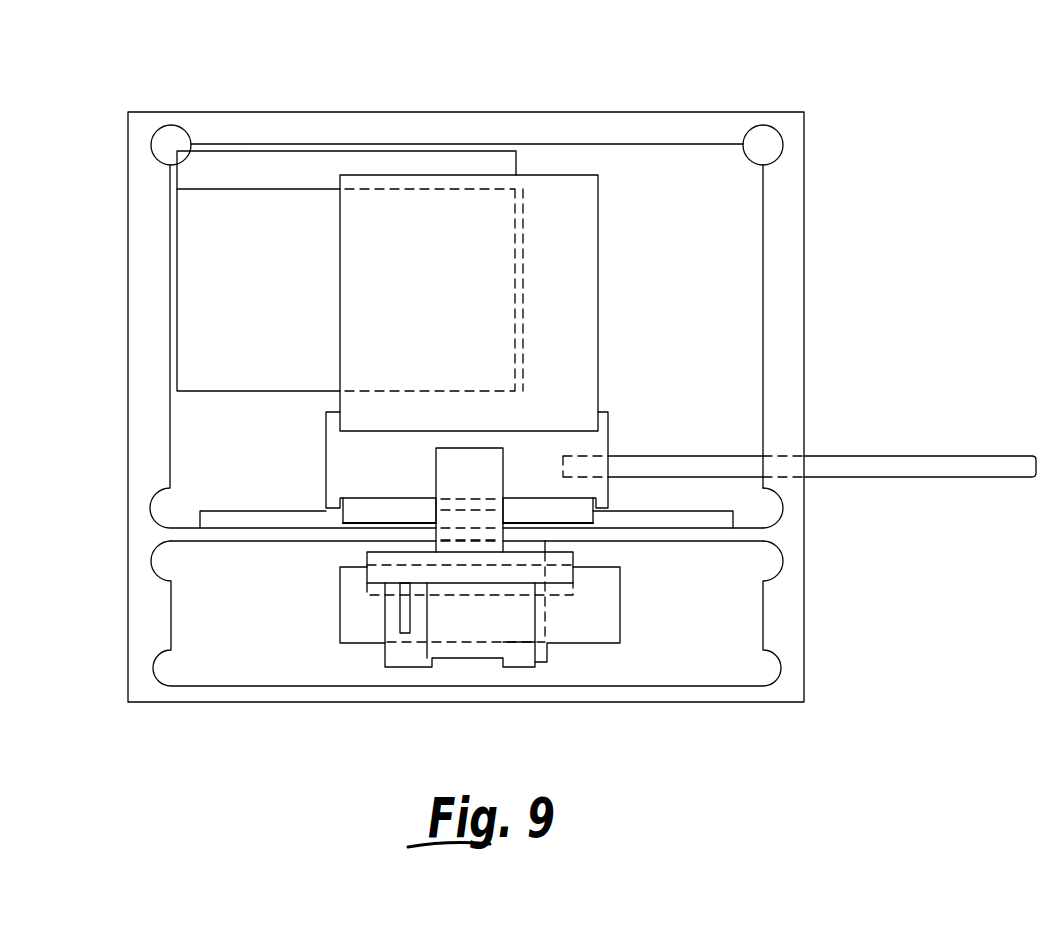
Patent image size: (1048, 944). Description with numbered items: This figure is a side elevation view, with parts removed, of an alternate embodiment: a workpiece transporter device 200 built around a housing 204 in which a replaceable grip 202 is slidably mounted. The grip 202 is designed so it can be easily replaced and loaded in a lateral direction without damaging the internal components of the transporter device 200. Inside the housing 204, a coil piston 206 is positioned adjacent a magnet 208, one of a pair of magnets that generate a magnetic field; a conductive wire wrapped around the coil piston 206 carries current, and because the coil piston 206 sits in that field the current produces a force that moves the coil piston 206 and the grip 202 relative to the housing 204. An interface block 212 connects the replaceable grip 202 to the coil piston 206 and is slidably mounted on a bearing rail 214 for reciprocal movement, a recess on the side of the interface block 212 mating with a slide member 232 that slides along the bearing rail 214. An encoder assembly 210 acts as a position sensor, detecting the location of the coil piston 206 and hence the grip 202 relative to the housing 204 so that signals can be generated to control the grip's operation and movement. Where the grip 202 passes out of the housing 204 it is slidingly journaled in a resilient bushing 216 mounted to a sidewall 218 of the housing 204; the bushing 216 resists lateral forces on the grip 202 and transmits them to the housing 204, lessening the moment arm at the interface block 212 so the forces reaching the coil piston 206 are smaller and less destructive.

The workpiece transporter device 200 is at (841, 164).
The replaceable grip 202 is at (913, 455).
The housing 204 is at (802, 663).
The coil piston 206 is at (585, 185).
The magnet 208 is at (303, 168).
The encoder assembly 210 is at (461, 660).
The interface block 212 is at (613, 446).
The bearing rail 214 is at (723, 520).
The resilient bushing 216 is at (778, 452).
The sidewall 218 is at (788, 542).
The slide member 232 is at (582, 524).